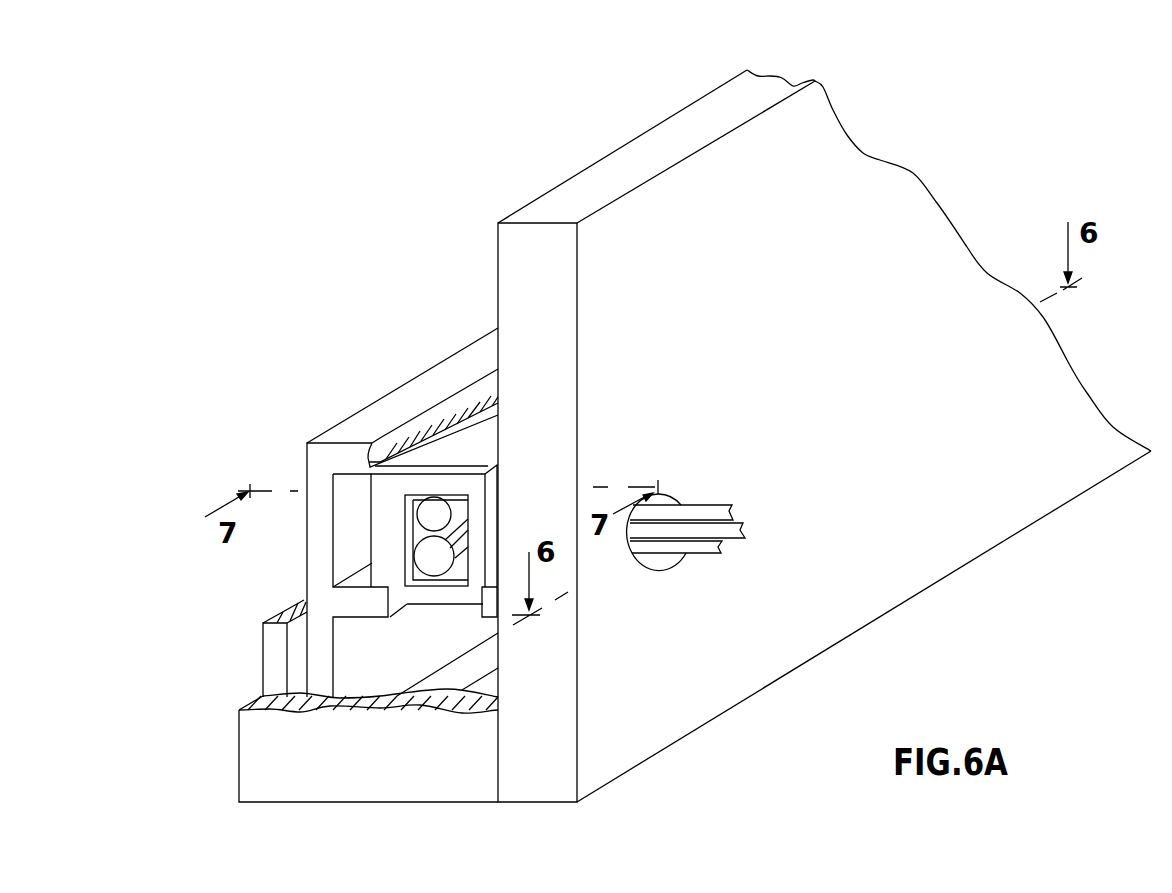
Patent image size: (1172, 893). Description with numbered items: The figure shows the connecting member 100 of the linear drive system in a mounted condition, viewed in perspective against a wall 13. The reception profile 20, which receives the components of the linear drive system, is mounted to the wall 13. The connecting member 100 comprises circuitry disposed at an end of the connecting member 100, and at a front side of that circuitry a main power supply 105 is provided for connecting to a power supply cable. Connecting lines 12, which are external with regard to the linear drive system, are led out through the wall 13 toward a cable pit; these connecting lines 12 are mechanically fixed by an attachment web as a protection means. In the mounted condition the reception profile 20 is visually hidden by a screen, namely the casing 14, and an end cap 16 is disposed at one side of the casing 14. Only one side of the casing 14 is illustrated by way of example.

The connecting lines 12 is at (703, 513).
The wall 13 is at (655, 708).
The casing 14 is at (277, 660).
The end cap 16 is at (260, 748).
The reception profile 20 is at (362, 428).
The connecting member 100 is at (372, 530).
The main power supply 105 is at (457, 568).